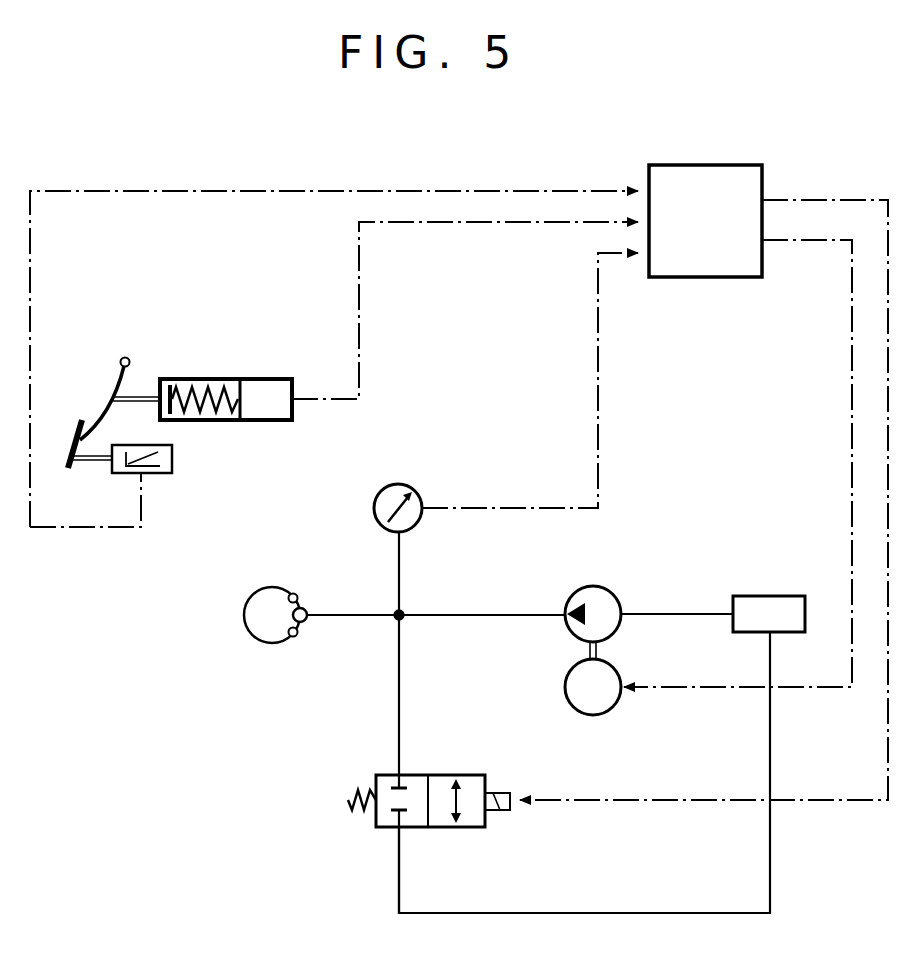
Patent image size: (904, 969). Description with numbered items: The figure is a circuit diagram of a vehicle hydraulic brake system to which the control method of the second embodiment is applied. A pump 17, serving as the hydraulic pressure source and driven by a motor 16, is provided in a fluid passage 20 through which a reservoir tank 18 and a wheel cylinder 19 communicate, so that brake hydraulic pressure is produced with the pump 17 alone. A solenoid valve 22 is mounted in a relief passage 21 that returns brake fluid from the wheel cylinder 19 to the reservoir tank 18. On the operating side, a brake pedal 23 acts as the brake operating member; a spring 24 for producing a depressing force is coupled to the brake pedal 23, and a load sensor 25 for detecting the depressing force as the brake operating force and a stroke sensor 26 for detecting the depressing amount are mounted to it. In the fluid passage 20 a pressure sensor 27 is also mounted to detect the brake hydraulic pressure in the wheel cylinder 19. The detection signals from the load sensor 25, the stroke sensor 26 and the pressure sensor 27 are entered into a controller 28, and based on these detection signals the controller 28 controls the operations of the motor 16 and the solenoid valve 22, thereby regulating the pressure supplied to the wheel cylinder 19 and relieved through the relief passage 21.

The motor 16 is at (598, 707).
The pump 17 is at (593, 595).
The reservoir tank 18 is at (760, 607).
The wheel cylinder 19 is at (307, 613).
The fluid passage 20 is at (683, 612).
The relief passage 21 is at (399, 873).
The solenoid valve 22 is at (385, 780).
The brake pedal 23 is at (78, 438).
The spring 24 is at (212, 392).
The load sensor 25 is at (270, 397).
The stroke sensor 26 is at (167, 465).
The pressure sensor 27 is at (398, 492).
The controller 28 is at (752, 184).